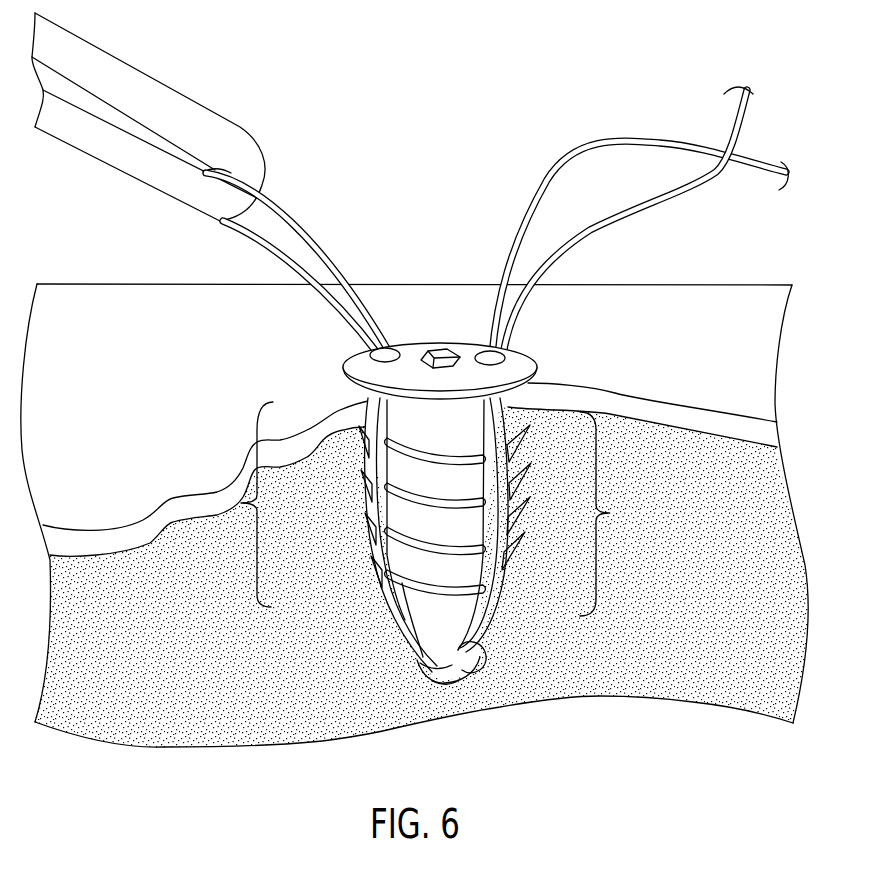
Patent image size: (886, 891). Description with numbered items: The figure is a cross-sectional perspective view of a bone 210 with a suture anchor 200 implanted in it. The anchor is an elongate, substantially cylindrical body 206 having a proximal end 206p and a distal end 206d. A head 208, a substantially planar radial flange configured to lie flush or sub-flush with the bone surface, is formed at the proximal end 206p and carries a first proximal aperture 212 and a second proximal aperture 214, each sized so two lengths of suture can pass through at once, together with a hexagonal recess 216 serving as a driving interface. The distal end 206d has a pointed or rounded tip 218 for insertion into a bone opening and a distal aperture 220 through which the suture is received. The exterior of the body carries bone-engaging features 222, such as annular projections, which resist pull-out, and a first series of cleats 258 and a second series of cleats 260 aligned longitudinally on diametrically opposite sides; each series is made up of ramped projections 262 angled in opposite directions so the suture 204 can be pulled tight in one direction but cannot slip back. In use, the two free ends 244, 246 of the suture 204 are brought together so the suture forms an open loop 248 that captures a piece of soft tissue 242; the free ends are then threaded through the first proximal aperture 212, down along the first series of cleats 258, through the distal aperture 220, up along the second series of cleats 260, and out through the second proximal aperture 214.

The suture anchor 200 is at (298, 66).
The suture 204 is at (236, 241).
The elongate body 206 is at (415, 417).
The proximal end 206p is at (465, 337).
The distal end 206d is at (427, 627).
The head 208 is at (513, 357).
The bone 210 is at (86, 405).
The first proximal aperture 212 is at (376, 350).
The second proximal aperture 214 is at (514, 360).
The hexagonal recess 216 is at (437, 351).
The tip 218 is at (446, 686).
The distal aperture 220 is at (472, 668).
The bone-engaging features 222 is at (412, 615).
The soft tissue 242 is at (150, 90).
The first free end 244 is at (668, 145).
The second free end 246 is at (714, 180).
The open loop 248 is at (302, 227).
The first series of cleats 258 is at (242, 504).
The second series of cleats 260 is at (611, 514).
The ramped projections 262 is at (366, 445).